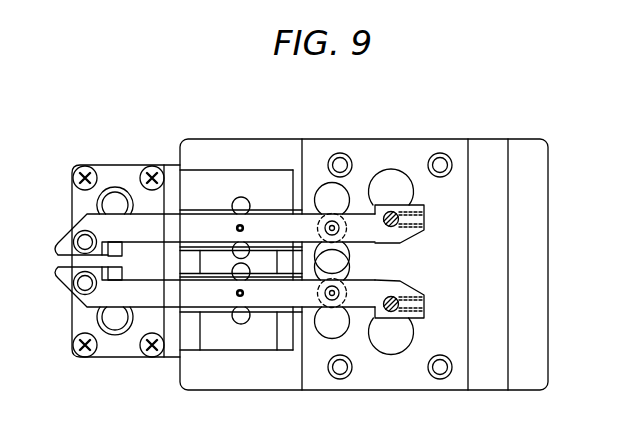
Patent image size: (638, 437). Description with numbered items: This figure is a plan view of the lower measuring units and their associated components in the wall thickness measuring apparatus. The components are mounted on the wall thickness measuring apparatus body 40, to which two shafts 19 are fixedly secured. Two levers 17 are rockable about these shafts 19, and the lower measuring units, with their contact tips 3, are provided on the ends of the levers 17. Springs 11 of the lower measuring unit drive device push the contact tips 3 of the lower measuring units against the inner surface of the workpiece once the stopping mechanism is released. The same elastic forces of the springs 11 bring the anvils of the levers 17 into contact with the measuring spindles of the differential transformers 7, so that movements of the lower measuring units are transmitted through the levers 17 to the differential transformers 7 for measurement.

The contact tip 3 is at (77, 236).
The differential transformer 7 is at (379, 197).
The spring 11 is at (346, 231).
The lever 17 is at (287, 222).
The shaft 19 is at (255, 247).
The wall thickness measuring apparatus body 40 is at (406, 138).